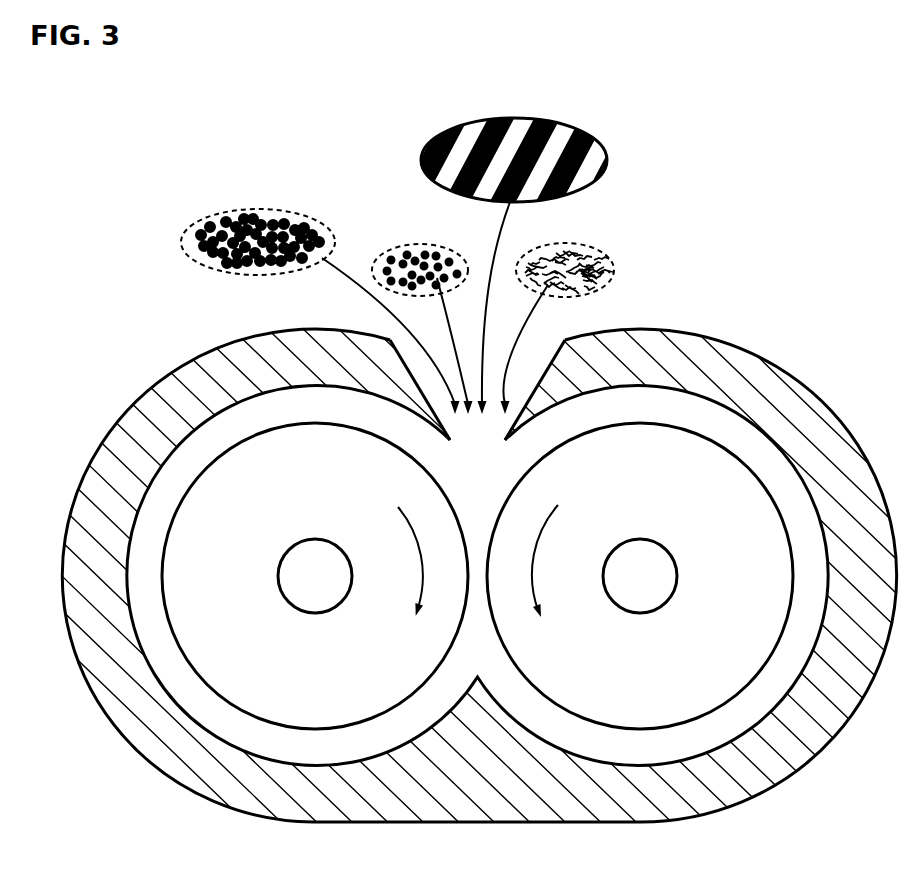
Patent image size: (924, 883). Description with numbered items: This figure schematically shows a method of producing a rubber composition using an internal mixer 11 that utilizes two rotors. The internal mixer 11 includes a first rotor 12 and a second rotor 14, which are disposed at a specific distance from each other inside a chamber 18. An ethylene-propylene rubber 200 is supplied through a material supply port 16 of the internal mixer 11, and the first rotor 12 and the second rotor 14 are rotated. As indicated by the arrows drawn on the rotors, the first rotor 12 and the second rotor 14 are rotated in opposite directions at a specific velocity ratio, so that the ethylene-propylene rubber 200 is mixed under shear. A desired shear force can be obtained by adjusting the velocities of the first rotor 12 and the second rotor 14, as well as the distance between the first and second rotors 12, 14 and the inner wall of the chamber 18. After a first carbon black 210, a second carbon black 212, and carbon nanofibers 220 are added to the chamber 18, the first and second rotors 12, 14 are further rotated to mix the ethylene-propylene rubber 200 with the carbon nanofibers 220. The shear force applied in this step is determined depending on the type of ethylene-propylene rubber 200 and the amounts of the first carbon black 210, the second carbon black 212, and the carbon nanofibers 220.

The internal mixer 11 is at (132, 354).
The first rotor 12 is at (752, 617).
The second rotor 14 is at (247, 626).
The material supply port 16 is at (530, 368).
The chamber 18 is at (685, 415).
The ethylene-propylene rubber 200 is at (551, 150).
The first carbon black 210 is at (422, 250).
The second carbon black 212 is at (252, 212).
The carbon nanofibers 220 is at (575, 257).